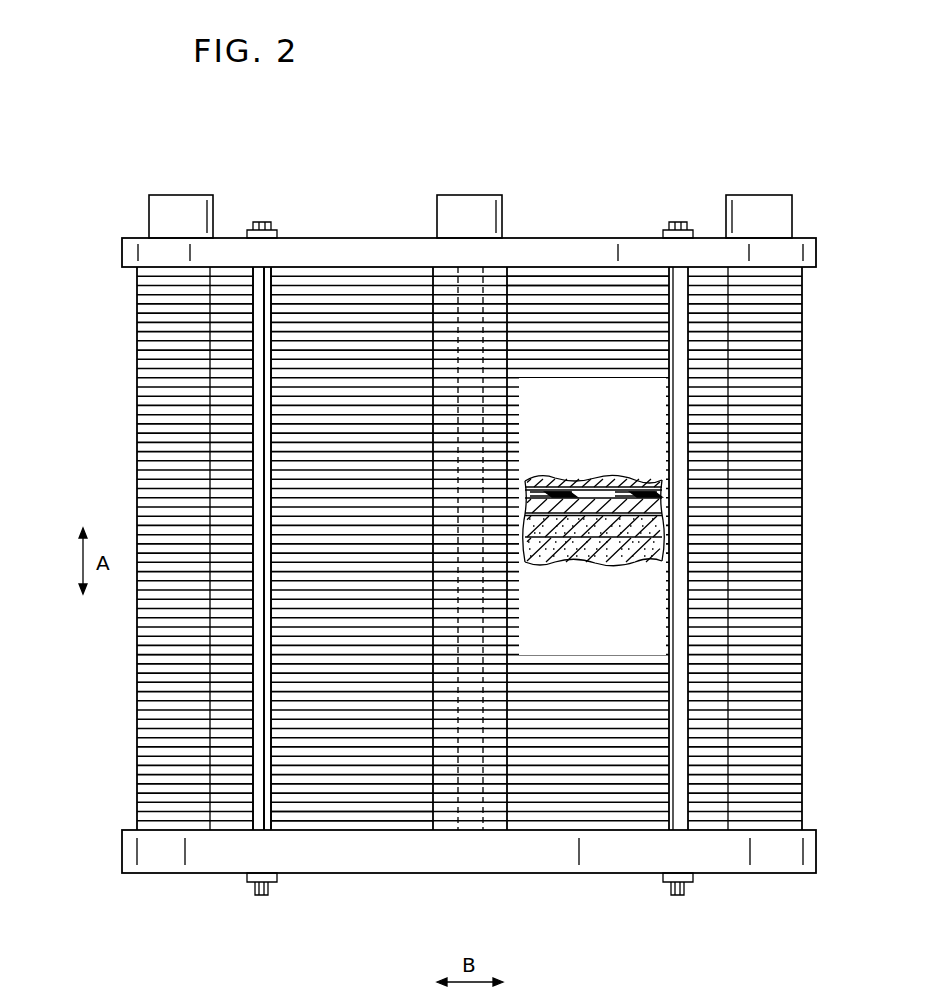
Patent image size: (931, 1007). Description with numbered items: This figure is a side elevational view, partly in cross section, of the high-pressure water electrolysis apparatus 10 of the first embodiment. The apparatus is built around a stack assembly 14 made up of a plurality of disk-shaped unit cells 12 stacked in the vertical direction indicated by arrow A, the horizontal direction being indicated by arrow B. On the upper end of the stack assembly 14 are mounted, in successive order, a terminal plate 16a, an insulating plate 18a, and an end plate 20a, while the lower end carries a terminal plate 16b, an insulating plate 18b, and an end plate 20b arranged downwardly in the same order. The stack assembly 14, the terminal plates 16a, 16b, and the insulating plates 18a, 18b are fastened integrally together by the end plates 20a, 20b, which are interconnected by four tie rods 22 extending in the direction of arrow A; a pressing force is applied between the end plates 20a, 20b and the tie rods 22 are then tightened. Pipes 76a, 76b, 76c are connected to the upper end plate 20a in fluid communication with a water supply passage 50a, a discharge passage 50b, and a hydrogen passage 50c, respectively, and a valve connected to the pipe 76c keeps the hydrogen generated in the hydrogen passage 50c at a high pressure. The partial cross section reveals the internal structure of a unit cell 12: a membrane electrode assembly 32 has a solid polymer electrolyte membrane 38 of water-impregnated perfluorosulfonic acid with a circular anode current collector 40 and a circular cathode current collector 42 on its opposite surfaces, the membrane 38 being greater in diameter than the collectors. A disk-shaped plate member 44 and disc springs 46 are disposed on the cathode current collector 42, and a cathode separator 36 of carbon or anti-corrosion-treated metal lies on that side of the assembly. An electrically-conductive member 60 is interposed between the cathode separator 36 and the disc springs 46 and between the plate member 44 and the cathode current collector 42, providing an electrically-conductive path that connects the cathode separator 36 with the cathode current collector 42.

The high-pressure water electrolysis apparatus 10 is at (658, 127).
The unit cell 12 is at (137, 656).
The stack assembly 14 is at (76, 677).
The terminal plate 16a is at (640, 283).
The terminal plate 16b is at (377, 822).
The insulating plate 18a is at (585, 270).
The insulating plate 18b is at (320, 826).
The end plate 20a is at (298, 238).
The end plate 20b is at (752, 873).
The tie rod 22 is at (262, 830).
The membrane electrode assembly 32 is at (594, 521).
The cathode separator 36 is at (558, 469).
The solid polymer electrolyte membrane 38 is at (585, 537).
The anode current collector 40 is at (528, 612).
The cathode current collector 42 is at (549, 540).
The plate member 44 is at (651, 491).
The disc spring 46 is at (585, 482).
The electrically-conductive member 60 is at (625, 496).
The pipe 76a is at (160, 178).
The pipe 76b is at (780, 182).
The pipe 76c is at (452, 178).
The water supply passage 50a is at (163, 207).
The discharge passage 50b is at (780, 213).
The hydrogen passage 50c is at (452, 207).